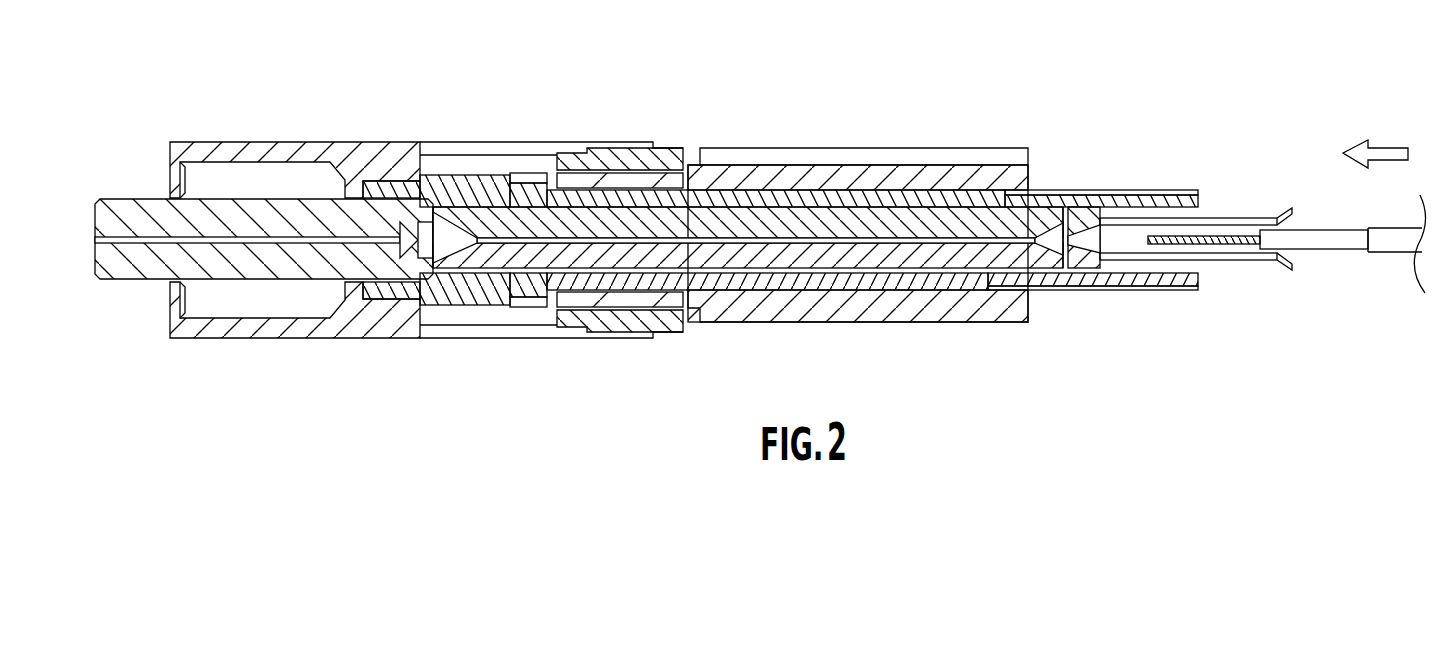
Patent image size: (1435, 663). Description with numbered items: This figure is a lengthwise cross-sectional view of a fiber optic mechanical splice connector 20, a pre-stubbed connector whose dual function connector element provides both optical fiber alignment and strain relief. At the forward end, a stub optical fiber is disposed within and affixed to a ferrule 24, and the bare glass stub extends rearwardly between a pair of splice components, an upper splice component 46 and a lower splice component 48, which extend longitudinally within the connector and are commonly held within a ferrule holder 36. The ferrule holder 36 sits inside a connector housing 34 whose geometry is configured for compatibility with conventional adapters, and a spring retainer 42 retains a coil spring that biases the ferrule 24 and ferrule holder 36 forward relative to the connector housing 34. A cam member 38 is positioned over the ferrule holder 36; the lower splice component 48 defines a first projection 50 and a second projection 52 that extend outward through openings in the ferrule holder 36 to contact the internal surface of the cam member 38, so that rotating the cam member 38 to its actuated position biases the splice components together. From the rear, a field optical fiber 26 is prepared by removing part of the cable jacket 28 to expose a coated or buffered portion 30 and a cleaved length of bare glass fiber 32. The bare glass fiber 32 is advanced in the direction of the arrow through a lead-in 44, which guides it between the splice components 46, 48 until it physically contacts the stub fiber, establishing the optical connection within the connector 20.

The fiber optic mechanical splice connector 20 is at (698, 88).
The ferrule 24 is at (100, 279).
The field optical fiber 26 is at (1395, 278).
The cable jacket 28 is at (1382, 243).
The coated or buffered portion 30 is at (1328, 252).
The bare glass fiber 32 is at (1223, 245).
The connector housing 34 is at (373, 142).
The ferrule holder 36 is at (410, 296).
The cam member 38 is at (983, 150).
The spring retainer 42 is at (657, 305).
The lead-in 44 is at (1262, 218).
The upper splice component 46 is at (790, 217).
The lower splice component 48 is at (795, 265).
The first projection 50 is at (603, 275).
The second projection 52 is at (952, 265).